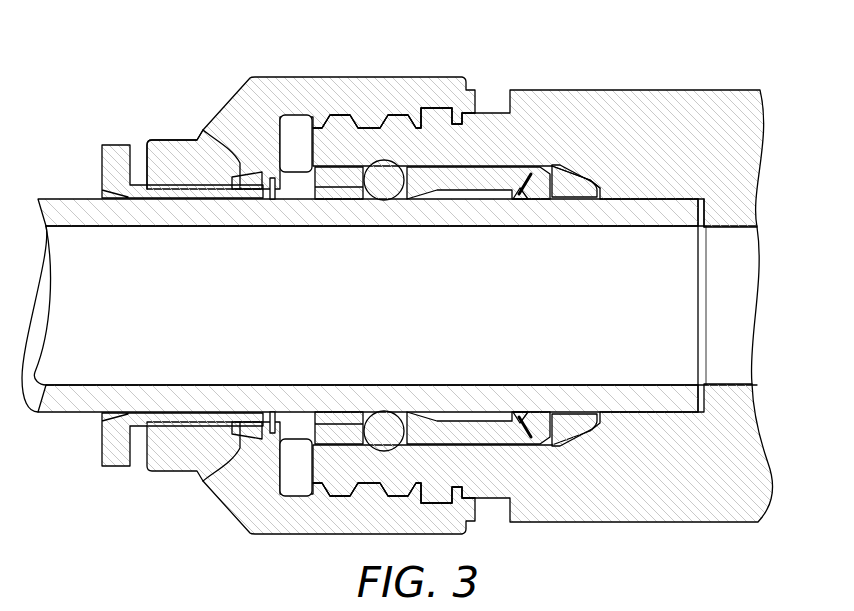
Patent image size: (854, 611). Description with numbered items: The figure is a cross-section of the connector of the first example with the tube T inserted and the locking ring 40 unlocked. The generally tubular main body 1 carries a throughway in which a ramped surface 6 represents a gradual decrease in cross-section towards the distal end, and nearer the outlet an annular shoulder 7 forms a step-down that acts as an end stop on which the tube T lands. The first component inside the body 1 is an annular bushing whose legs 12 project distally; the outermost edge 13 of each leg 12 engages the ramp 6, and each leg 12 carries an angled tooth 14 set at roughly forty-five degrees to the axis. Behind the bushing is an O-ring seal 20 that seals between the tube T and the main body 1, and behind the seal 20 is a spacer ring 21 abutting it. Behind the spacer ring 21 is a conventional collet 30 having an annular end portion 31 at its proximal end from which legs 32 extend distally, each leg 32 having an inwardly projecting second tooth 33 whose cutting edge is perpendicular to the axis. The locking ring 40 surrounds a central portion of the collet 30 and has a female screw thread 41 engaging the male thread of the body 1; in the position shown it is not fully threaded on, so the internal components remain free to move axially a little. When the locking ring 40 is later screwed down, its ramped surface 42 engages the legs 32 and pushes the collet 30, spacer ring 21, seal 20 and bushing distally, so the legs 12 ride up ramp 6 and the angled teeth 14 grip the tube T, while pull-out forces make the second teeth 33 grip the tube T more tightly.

The main body 1 is at (656, 151).
The ramped surface 6 is at (573, 177).
The annular shoulder 7 is at (704, 204).
The legs 12 is at (490, 173).
The outermost edge 13 is at (550, 163).
The angled tooth 14 is at (528, 200).
The O-ring seal 20 is at (384, 193).
The spacer ring 21 is at (334, 180).
The collet 30 is at (263, 203).
The annular end portion 31 is at (121, 462).
The legs 32 is at (232, 412).
The second tooth 33 is at (277, 412).
The locking ring 40 is at (236, 135).
The female screw thread 41 is at (361, 120).
The ramped surface 42 is at (203, 130).
The tube T is at (622, 220).